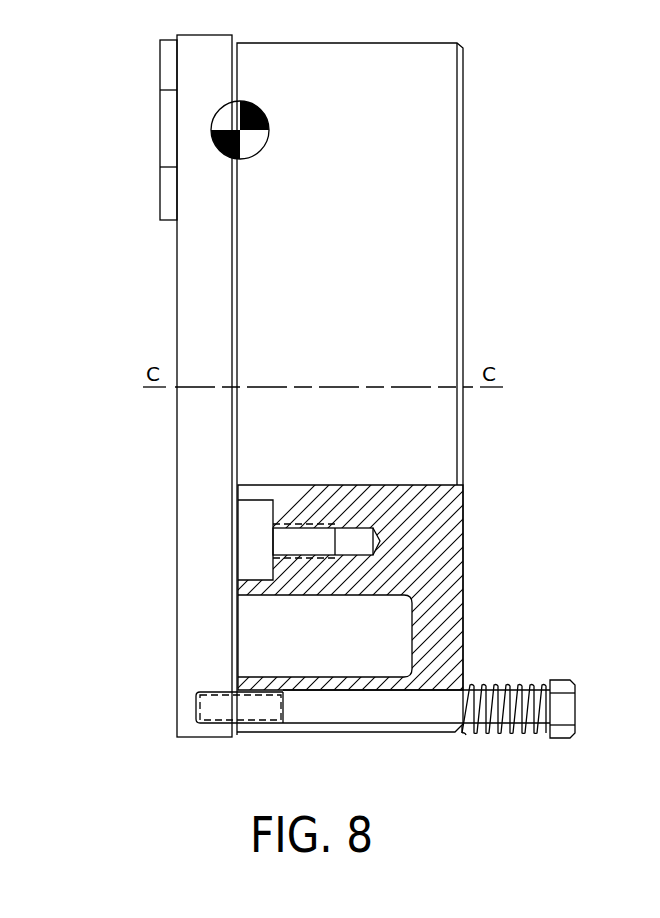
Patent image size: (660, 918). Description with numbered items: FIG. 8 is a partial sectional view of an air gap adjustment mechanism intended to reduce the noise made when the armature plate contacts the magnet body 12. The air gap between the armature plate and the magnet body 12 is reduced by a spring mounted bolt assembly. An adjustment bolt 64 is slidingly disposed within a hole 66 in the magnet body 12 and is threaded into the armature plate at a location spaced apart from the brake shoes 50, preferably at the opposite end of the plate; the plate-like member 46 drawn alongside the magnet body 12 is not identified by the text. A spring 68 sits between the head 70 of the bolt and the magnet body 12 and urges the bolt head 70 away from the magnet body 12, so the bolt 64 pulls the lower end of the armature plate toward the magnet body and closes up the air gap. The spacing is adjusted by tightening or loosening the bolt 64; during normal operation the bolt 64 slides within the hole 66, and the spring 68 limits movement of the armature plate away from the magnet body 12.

The magnet body 12 is at (420, 190).
The mounting plate 46 is at (201, 528).
The brake shoes 50 is at (160, 143).
The adjustment bolt 64 is at (458, 710).
The hole 66 is at (340, 728).
The spring 68 is at (500, 733).
The head 70 is at (565, 728).